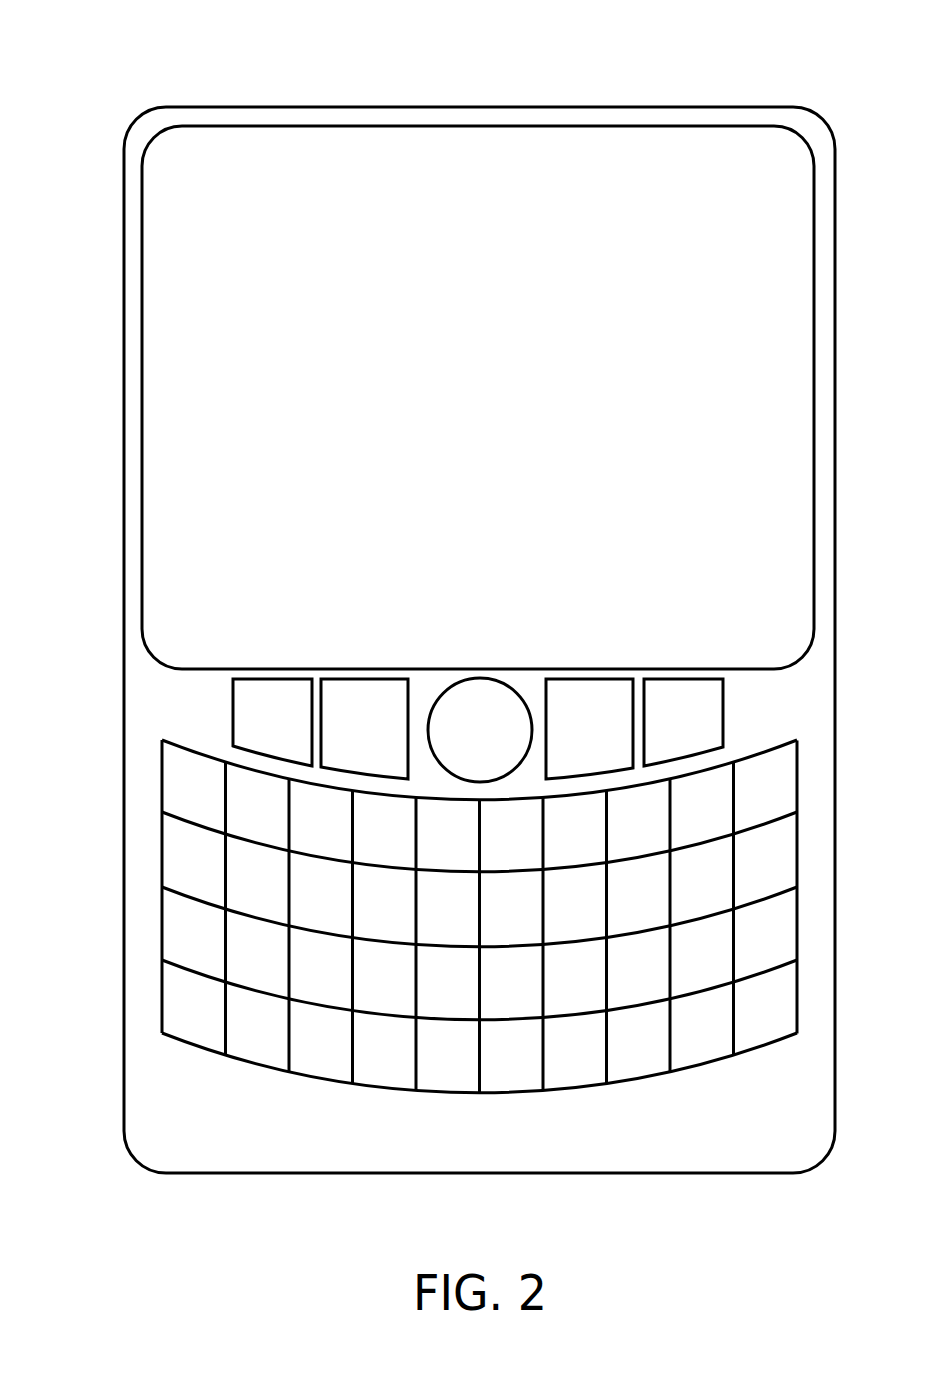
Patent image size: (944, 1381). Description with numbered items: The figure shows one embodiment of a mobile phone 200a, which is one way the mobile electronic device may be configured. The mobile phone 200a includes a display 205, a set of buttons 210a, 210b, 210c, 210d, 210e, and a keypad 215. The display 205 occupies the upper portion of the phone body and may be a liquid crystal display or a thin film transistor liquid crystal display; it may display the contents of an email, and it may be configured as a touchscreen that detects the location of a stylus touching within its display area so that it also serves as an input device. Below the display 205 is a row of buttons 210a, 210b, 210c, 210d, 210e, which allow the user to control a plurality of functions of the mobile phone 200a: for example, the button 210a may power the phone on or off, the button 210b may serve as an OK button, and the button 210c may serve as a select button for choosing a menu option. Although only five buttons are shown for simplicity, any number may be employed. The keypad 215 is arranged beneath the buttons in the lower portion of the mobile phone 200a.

The mobile phone 200a is at (101, 49).
The display 205 is at (501, 422).
The button 210a is at (256, 729).
The button 210b is at (377, 697).
The button 210c is at (478, 738).
The button 210d is at (590, 745).
The button 210e is at (703, 721).
The keypad 215 is at (163, 808).